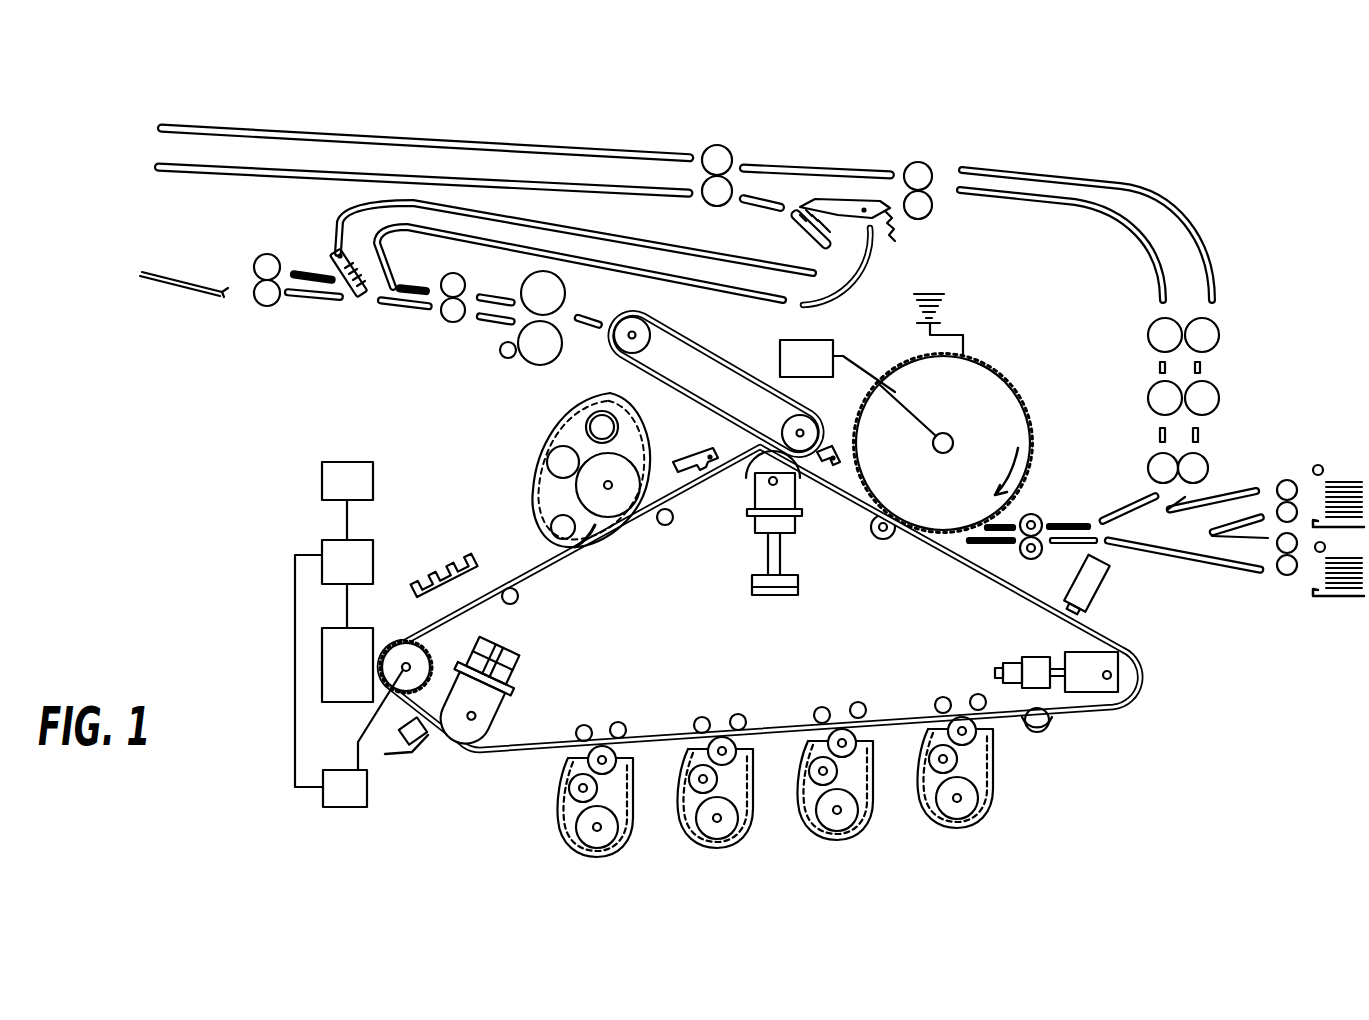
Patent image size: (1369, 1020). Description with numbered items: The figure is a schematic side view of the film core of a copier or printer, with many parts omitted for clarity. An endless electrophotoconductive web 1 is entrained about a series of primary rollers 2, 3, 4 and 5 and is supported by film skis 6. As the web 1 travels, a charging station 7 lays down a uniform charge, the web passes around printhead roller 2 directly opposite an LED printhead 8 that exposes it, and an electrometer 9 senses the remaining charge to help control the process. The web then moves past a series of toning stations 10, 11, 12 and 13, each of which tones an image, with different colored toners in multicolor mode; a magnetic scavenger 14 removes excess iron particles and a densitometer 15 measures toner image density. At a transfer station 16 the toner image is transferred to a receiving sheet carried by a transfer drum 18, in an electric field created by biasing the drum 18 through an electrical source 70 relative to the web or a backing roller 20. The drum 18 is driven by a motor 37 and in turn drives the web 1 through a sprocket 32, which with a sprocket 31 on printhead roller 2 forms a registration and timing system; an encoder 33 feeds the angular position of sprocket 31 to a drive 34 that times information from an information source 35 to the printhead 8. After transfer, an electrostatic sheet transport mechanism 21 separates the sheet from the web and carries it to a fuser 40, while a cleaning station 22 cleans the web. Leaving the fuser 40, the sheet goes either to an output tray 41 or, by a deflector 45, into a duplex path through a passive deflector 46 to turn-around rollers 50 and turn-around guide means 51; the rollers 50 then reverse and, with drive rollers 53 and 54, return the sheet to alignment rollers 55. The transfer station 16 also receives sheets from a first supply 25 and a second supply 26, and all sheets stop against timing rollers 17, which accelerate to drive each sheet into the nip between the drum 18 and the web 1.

The electrophotoconductive web 1 is at (528, 748).
The printhead roller 2 is at (398, 645).
The primary roller 3 is at (470, 742).
The primary roller 4 is at (1130, 660).
The primary roller 5 is at (758, 460).
The film skis 6 is at (518, 598).
The charging station 7 is at (447, 583).
The LED printhead 8 is at (330, 640).
The electrometer 9 is at (408, 757).
The toning station 10 is at (632, 828).
The toning station 11 is at (752, 812).
The toning station 12 is at (873, 803).
The toning station 13 is at (996, 803).
The magnetic scavenger 14 is at (1043, 735).
The densitometer 15 is at (1102, 580).
The transfer station 16 is at (1020, 503).
The timing rollers 17 is at (1035, 558).
The transfer drum 18 is at (1020, 430).
The backing roller 20 is at (882, 540).
The electrostatic sheet transport mechanism 21 is at (738, 370).
The cleaning station 22 is at (670, 460).
The first supply 25 is at (1300, 468).
The second supply 26 is at (1300, 585).
The sprocket 31 is at (425, 650).
The sprocket 32 is at (997, 382).
The encoder 33 is at (358, 807).
The drive 34 is at (373, 556).
The information source 35 is at (373, 485).
The motor 37 is at (833, 344).
The fuser 40 is at (564, 300).
The output tray 41 is at (192, 292).
The deflector 45 is at (350, 298).
The passive deflector 46 is at (845, 205).
The turn-around rollers 50 is at (718, 148).
The turn-around guide means 51 is at (490, 162).
The drive rollers 53 is at (925, 168).
The drive rollers 54 is at (1218, 340).
The alignment rollers 55 is at (1208, 460).
The electrical source 70 is at (915, 300).